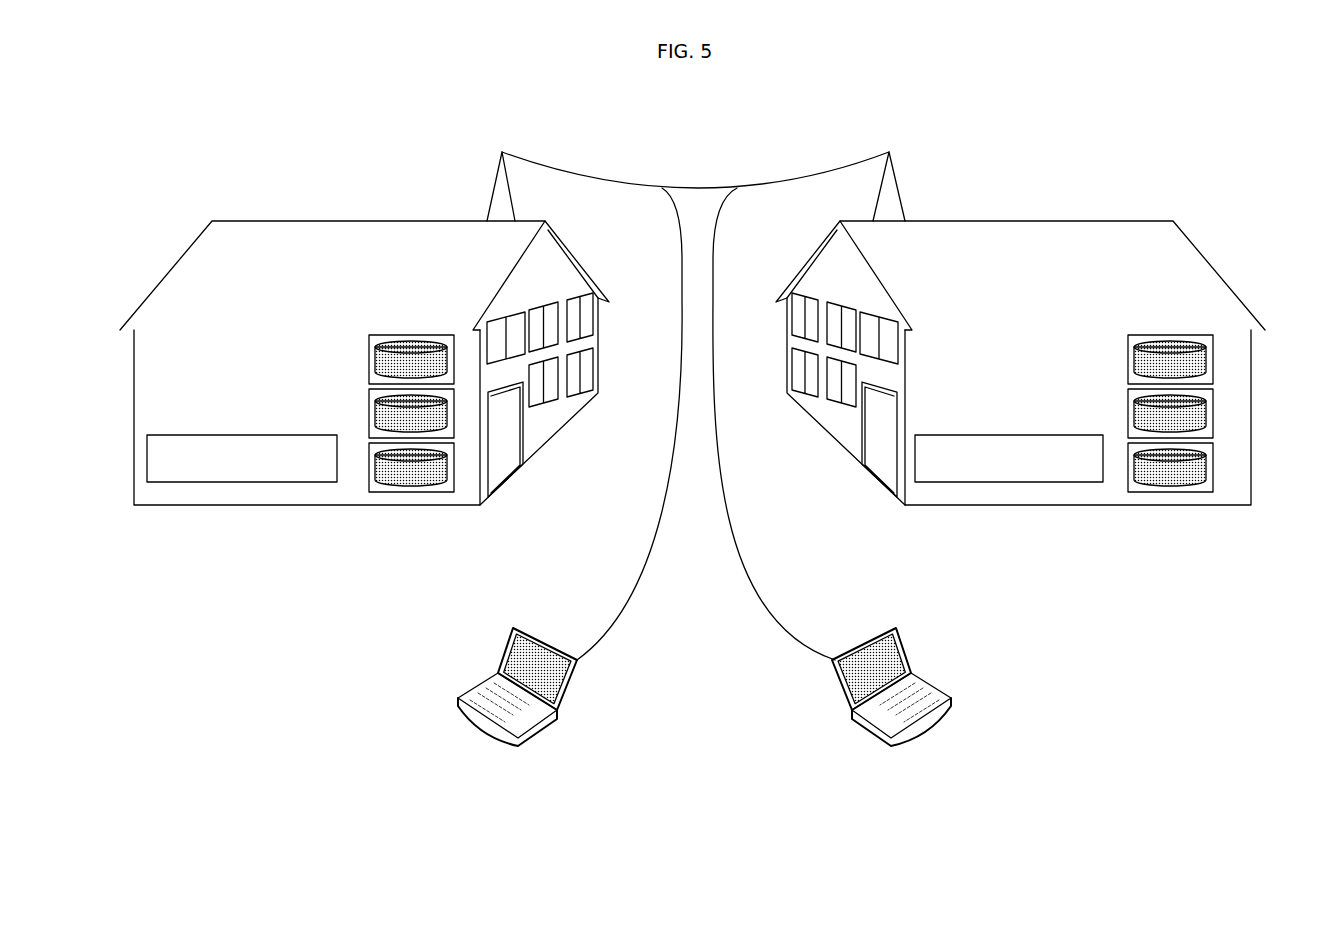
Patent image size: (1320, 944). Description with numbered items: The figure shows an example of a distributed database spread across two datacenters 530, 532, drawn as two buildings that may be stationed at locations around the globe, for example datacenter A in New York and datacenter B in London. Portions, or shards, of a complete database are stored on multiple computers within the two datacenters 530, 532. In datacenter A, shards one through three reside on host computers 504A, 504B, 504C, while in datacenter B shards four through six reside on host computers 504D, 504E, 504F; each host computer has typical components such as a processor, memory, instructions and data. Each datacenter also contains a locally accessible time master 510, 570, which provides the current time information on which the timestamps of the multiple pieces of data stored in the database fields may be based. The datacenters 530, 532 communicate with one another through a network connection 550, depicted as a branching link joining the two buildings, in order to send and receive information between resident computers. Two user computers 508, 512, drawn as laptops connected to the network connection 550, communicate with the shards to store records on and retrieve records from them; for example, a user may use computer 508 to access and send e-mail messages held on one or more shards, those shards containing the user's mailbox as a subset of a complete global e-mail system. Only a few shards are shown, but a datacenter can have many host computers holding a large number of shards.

The datacenter 530 is at (388, 355).
The datacenter 532 is at (1029, 395).
The network connection 550 is at (755, 187).
The time master 510 is at (235, 483).
The time master 570 is at (1002, 483).
The host computer 504A is at (454, 474).
The host computer 504B is at (454, 416).
The host computer 504C is at (454, 360).
The host computer 504D is at (1213, 472).
The host computer 504E is at (1213, 412).
The host computer 504F is at (1213, 362).
The computer 508 is at (458, 696).
The computer 512 is at (948, 696).